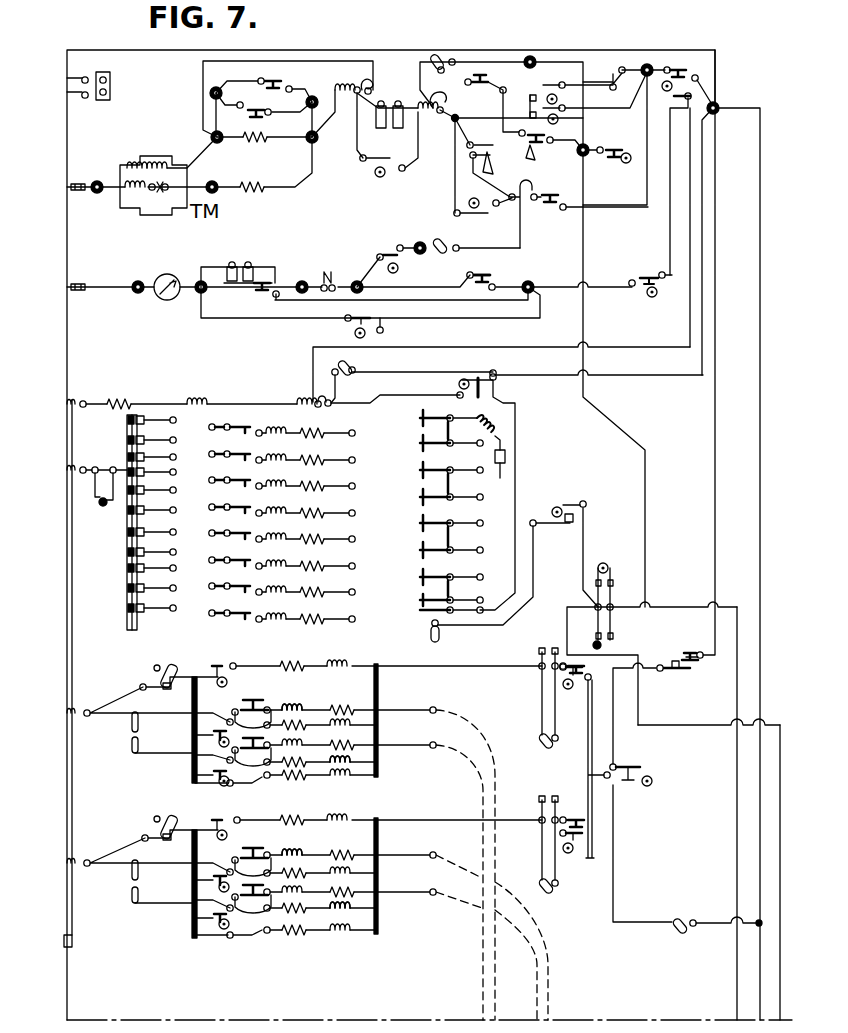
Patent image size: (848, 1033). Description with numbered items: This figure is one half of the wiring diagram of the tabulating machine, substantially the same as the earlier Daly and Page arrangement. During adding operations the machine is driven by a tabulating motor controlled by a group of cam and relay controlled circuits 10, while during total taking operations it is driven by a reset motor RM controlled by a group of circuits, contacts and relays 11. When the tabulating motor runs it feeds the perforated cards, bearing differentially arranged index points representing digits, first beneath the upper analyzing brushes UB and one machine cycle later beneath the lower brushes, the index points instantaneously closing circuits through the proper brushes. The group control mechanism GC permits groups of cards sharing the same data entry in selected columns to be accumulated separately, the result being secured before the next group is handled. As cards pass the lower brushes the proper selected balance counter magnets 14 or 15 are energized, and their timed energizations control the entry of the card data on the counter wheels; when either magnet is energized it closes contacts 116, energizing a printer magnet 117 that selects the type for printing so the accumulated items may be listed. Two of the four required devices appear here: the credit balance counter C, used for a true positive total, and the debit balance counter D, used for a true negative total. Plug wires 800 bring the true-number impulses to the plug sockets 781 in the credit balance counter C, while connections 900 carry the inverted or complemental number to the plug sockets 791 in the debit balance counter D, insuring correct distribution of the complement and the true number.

The cam and relay controlled circuits 10 is at (400, 124).
The group of circuits, contacts and relays 11 is at (431, 262).
The balance counter magnet 14 is at (285, 740).
The balance counter magnet 15 is at (294, 890).
The contacts 116 is at (262, 752).
The printer magnet 117 is at (343, 765).
The plug sockets 781 is at (433, 714).
The plug sockets 791 is at (433, 858).
The plug wires 800 is at (481, 970).
The connections 900 is at (548, 968).
The reset motor RM is at (137, 298).
The upper analyzing brushes UB is at (199, 513).
The group control mechanism GC is at (302, 523).
The credit balance counter C is at (325, 717).
The debit balance counter D is at (325, 867).